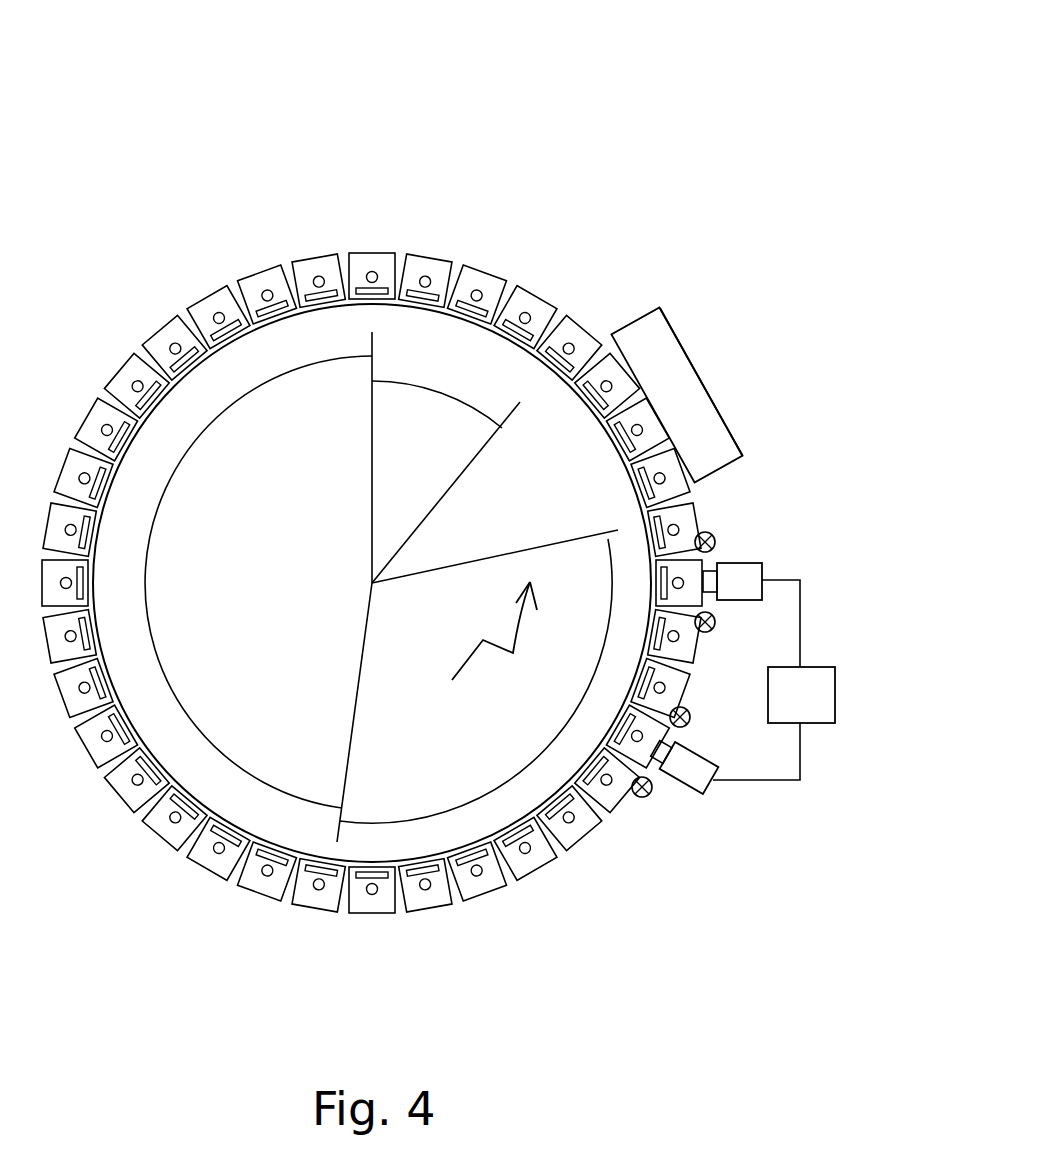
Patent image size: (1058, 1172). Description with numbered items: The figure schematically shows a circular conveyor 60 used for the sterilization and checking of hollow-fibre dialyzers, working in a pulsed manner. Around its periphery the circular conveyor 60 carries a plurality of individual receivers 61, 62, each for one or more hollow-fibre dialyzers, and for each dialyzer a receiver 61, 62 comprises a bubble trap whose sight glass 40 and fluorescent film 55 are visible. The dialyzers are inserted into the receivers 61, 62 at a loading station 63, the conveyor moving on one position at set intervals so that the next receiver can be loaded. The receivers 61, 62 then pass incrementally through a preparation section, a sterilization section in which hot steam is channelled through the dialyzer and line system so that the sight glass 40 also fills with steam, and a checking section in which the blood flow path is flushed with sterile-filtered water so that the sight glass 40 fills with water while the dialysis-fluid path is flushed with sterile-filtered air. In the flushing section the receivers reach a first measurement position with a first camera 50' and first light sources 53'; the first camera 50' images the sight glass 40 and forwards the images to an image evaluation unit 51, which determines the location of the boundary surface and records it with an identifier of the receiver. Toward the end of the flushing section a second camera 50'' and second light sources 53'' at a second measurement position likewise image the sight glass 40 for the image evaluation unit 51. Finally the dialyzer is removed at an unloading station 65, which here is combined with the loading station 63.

The circular conveyor 60 is at (556, 98).
The receiver 61 is at (487, 276).
The receiver 62 is at (425, 258).
The sight glass 40 is at (418, 281).
The fluorescent film 55 is at (405, 290).
The loading station 63 is at (675, 332).
The unloading station 65 is at (728, 428).
The second light sources 53'' is at (754, 562).
The second camera 50'' is at (779, 591).
The image evaluation unit 51 is at (835, 694).
The first light sources 53' is at (703, 806).
The first camera 50' is at (723, 798).